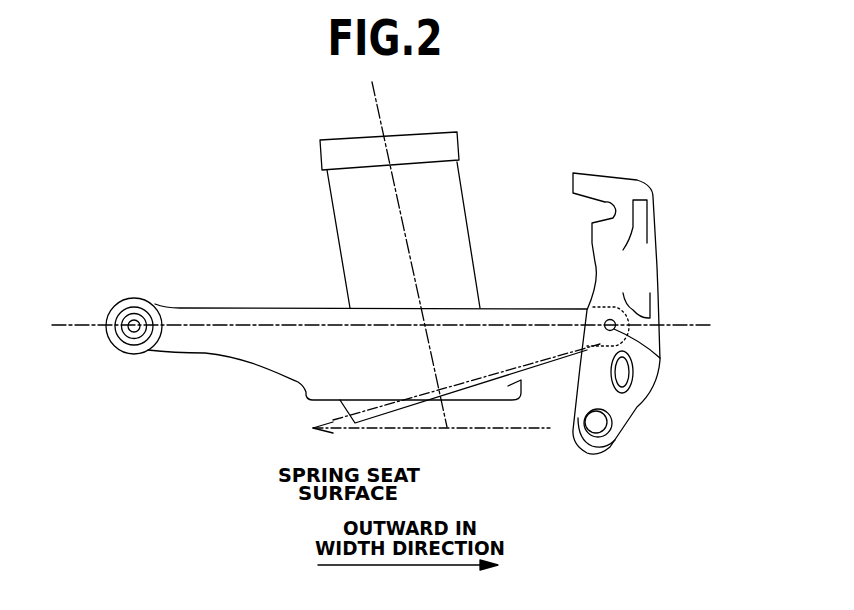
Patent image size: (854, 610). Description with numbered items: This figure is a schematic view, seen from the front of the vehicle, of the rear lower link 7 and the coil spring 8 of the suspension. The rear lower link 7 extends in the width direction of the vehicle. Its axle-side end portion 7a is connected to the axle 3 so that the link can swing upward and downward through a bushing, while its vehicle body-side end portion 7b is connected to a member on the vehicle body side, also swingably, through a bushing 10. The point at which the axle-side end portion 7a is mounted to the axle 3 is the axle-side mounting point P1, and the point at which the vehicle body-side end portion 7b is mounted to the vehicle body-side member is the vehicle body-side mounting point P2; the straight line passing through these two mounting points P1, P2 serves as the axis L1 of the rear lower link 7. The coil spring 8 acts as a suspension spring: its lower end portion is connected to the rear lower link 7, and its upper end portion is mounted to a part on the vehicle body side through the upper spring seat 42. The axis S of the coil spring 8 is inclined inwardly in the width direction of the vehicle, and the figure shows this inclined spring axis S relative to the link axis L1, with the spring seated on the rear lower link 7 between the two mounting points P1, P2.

The axle 3 is at (643, 223).
The rear lower link 7 is at (243, 352).
The axle-side end portion 7a is at (637, 307).
The vehicle body-side end portion 7b is at (133, 302).
The coil spring 8 is at (453, 192).
The bushing 10 is at (132, 344).
The upper spring seat 42 is at (343, 147).
The axis of rear lower link L1 is at (281, 322).
The axis of coil spring S is at (408, 243).
The axle-side mounting point P1 is at (655, 347).
The vehicle body-side mounting point P2 is at (126, 321).